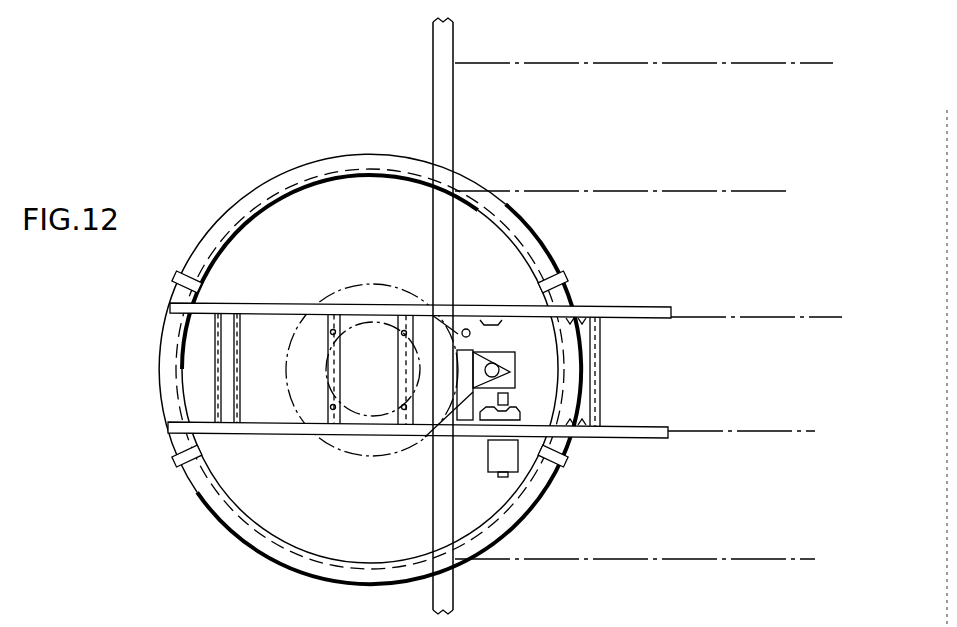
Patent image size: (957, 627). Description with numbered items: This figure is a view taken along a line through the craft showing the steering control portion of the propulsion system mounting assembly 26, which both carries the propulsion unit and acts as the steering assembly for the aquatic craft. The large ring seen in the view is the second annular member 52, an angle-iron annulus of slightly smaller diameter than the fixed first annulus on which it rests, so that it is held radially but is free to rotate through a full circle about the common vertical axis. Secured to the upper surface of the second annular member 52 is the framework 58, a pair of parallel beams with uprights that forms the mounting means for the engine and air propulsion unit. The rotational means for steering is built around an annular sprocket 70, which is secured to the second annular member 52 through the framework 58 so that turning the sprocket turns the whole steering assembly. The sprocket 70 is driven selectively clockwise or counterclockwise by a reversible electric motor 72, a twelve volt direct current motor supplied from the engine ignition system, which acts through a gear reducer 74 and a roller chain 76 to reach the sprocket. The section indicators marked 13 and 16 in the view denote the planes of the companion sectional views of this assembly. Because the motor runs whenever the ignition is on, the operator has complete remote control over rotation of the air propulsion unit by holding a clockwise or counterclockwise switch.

The propulsion system mounting assembly 26 is at (318, 150).
The second annular member 52 is at (236, 208).
The framework 58 is at (287, 303).
The annular sprocket 70 is at (386, 447).
The reversible electric motor 72 is at (492, 462).
The gear reducer 74 is at (512, 366).
The roller chain 76 is at (457, 313).
The section line 13- 13 is at (152, 366).
The section line 16- 16 is at (163, 466).